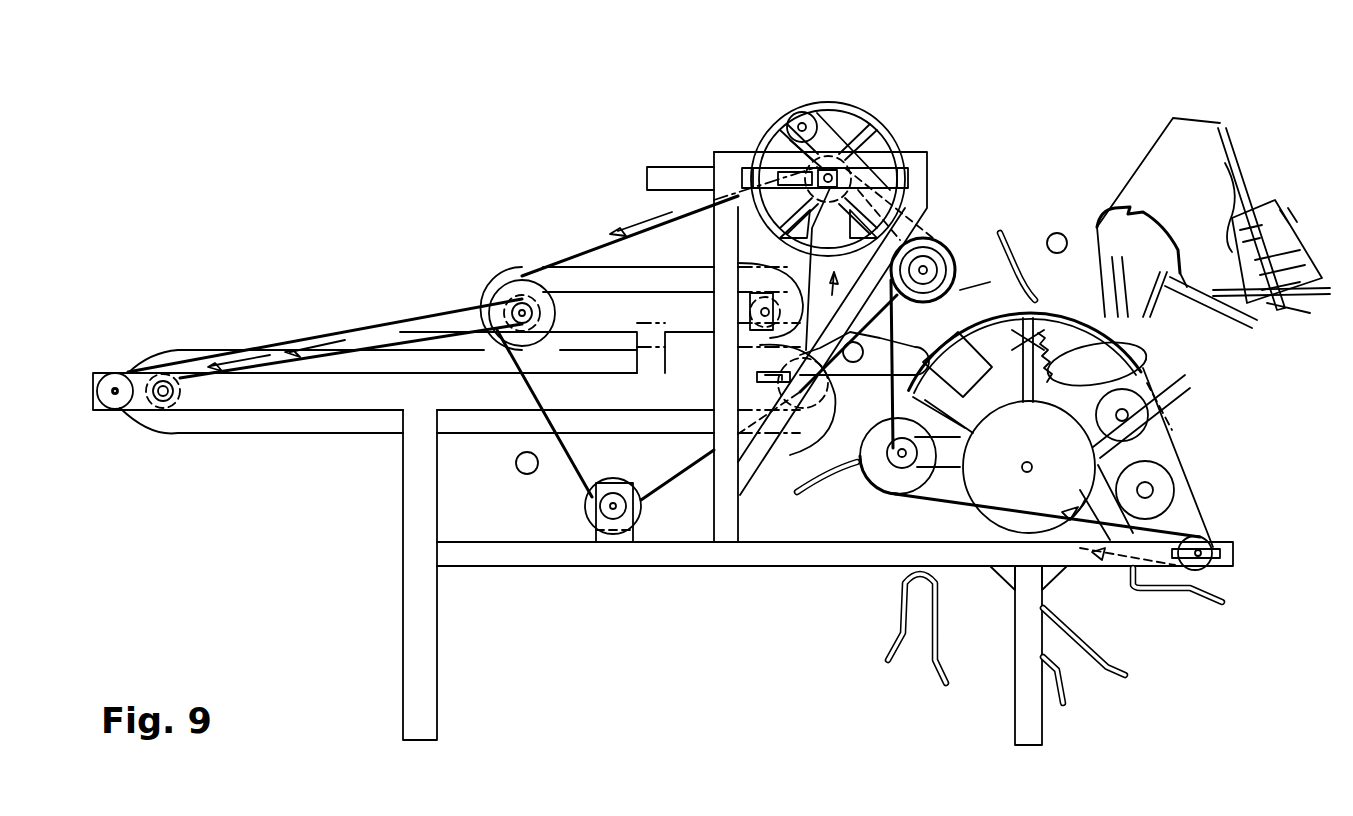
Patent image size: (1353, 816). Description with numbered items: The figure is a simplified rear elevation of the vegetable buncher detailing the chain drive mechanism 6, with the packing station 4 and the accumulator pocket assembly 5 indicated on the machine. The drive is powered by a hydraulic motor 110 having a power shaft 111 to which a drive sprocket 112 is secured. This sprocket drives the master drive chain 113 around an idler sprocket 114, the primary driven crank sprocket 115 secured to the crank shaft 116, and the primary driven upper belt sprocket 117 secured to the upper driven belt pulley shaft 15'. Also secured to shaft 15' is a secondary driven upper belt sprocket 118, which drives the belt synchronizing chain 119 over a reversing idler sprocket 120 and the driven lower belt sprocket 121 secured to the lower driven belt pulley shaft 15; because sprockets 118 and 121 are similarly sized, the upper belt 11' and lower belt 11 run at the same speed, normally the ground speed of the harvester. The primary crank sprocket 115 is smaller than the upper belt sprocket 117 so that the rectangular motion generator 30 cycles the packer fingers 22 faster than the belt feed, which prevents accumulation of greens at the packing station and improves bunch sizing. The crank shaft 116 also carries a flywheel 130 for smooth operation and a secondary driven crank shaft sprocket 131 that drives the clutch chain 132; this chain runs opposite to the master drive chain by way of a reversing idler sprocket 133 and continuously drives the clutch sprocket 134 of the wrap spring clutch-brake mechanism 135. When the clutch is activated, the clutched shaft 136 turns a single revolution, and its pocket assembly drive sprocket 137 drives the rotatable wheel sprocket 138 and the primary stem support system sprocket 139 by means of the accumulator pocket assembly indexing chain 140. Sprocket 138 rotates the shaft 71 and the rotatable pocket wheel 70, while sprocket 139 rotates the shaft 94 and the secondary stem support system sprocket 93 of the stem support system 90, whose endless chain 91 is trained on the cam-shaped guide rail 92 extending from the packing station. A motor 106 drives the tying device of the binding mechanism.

The packing station 4 is at (864, 353).
The accumulator pocket assembly 5 is at (1047, 270).
The chain drive mechanism 6 is at (527, 463).
The lower belt 11 is at (663, 448).
The upper belt 11' is at (464, 307).
The lower driven belt pulley shaft 15 is at (119, 432).
The upper driven belt pulley shaft 15' is at (553, 314).
The packer fingers 22 is at (760, 338).
The rectangular motion generator 30 is at (680, 170).
The rotatable pocket wheel 70 is at (968, 392).
The shaft 71 is at (1032, 465).
The stem support system 90 is at (1088, 315).
The endless chain 91 is at (1190, 520).
The cam-shaped guide rail 92 is at (1051, 388).
The secondary stem support system sprocket 93 is at (862, 478).
The shaft 94 is at (890, 460).
The motor 106 is at (1140, 500).
The hydraulic motor 110 is at (585, 512).
The power shaft 111 is at (615, 500).
The drive sprocket 112 is at (630, 510).
The master drive chain 113 is at (668, 495).
The idler sprocket 114 is at (785, 400).
The primary driven crank sprocket 115 is at (800, 165).
The crank shaft 116 is at (820, 253).
The primary driven upper belt sprocket 117 is at (500, 300).
The secondary driven upper belt sprocket 118 is at (520, 300).
The belt synchronizing chain 119 is at (270, 345).
The reversing idler sprocket 120 is at (110, 373).
The driven lower belt sprocket 121 is at (167, 405).
The flywheel 130 is at (825, 112).
The secondary driven crank shaft sprocket 131 is at (855, 145).
The clutch chain 132 is at (908, 180).
The reversing idler sprocket 133 is at (802, 112).
The clutch sprocket 134 is at (935, 240).
The wrap spring clutch-brake mechanism 135 is at (950, 262).
The clutched shaft 136 is at (932, 285).
The pocket assembly drive sprocket 137 is at (905, 285).
The rotatable wheel sprocket 138 is at (1040, 535).
The primary stem support system sprocket 139 is at (905, 490).
The accumulator pocket assembly indexing chain 140 is at (1029, 467).